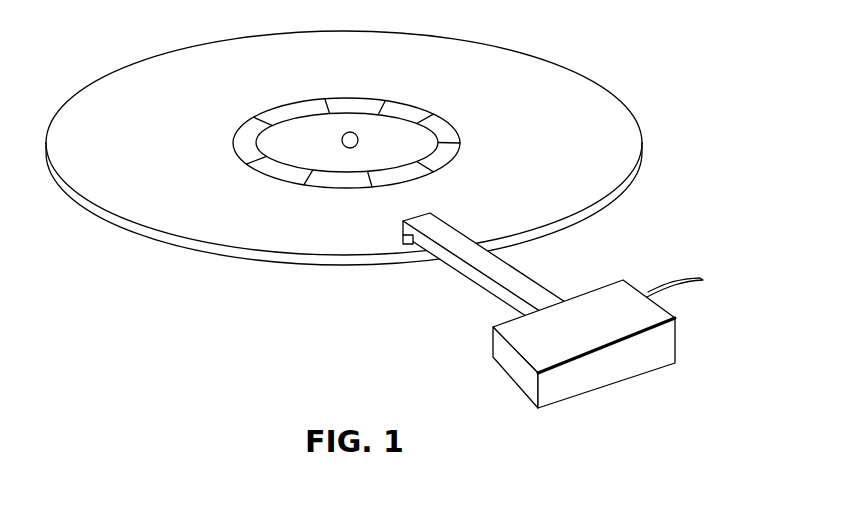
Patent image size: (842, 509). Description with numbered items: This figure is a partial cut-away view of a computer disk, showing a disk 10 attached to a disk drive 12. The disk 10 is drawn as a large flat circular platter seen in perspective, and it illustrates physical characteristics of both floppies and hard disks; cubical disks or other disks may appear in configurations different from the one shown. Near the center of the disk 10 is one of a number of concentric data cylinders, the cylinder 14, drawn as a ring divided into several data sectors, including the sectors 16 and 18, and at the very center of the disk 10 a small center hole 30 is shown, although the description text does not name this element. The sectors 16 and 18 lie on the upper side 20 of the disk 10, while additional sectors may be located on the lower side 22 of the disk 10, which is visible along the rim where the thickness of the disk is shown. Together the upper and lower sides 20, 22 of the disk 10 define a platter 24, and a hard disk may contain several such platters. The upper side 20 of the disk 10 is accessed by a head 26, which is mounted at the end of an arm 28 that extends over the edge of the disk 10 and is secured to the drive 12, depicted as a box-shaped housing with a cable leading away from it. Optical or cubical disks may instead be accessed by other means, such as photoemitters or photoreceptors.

The disk 10 is at (366, 136).
The disk drive 12 is at (562, 343).
The cylinder 14 is at (316, 122).
The sector 16 is at (335, 134).
The sector 18 is at (222, 136).
The upper side 20 is at (344, 75).
The lower side 22 is at (366, 199).
The platter 24 is at (344, 204).
The head 26 is at (367, 274).
The arm 28 is at (461, 280).
The center hole 30 is at (396, 112).